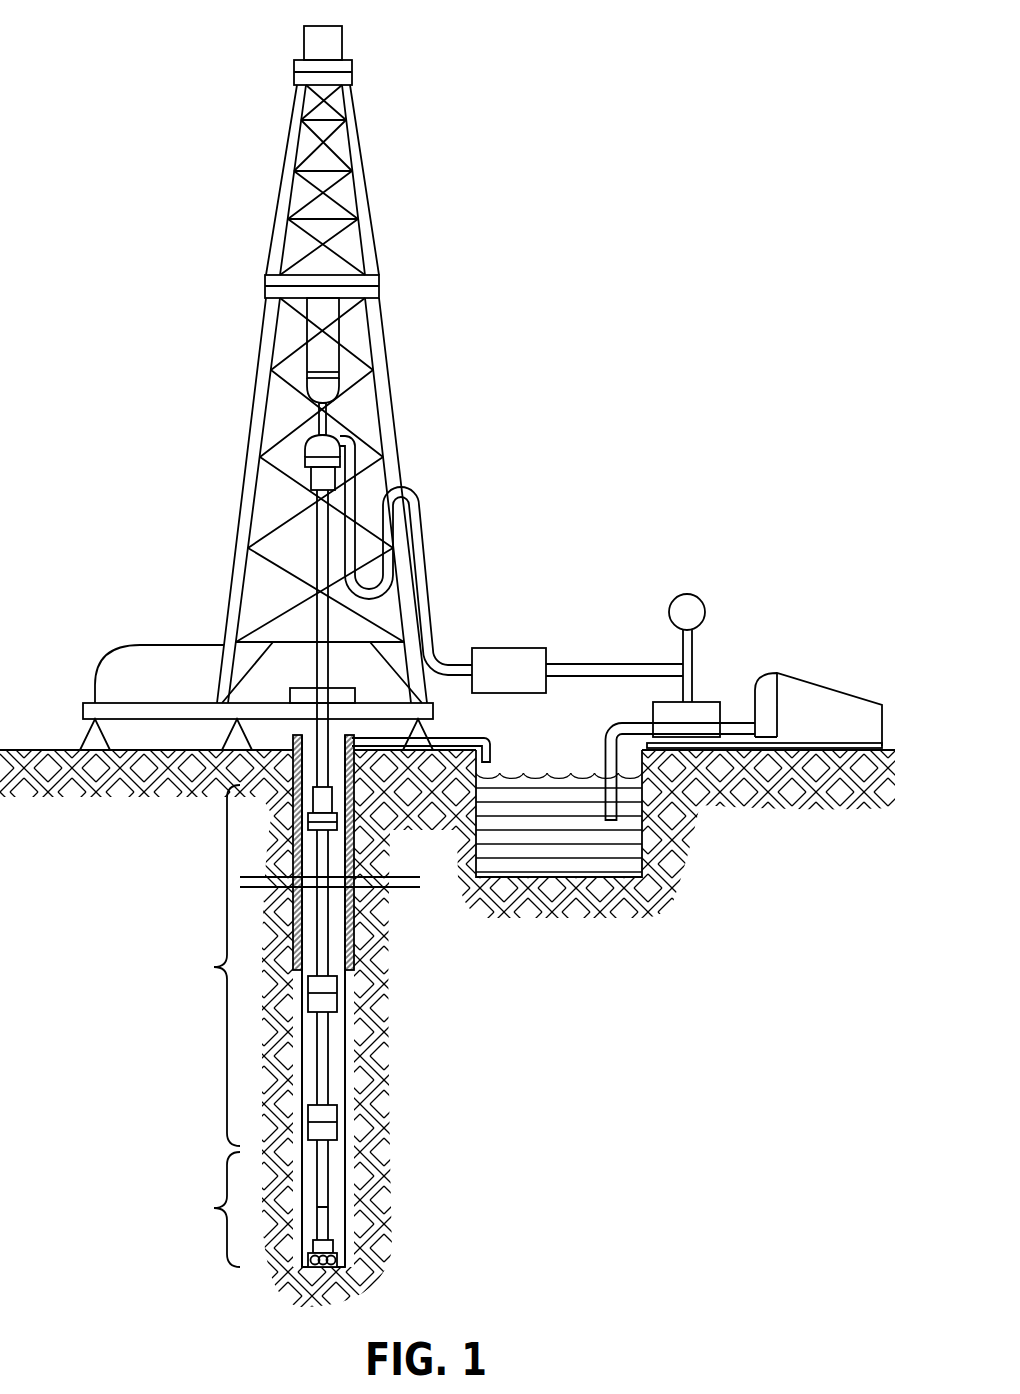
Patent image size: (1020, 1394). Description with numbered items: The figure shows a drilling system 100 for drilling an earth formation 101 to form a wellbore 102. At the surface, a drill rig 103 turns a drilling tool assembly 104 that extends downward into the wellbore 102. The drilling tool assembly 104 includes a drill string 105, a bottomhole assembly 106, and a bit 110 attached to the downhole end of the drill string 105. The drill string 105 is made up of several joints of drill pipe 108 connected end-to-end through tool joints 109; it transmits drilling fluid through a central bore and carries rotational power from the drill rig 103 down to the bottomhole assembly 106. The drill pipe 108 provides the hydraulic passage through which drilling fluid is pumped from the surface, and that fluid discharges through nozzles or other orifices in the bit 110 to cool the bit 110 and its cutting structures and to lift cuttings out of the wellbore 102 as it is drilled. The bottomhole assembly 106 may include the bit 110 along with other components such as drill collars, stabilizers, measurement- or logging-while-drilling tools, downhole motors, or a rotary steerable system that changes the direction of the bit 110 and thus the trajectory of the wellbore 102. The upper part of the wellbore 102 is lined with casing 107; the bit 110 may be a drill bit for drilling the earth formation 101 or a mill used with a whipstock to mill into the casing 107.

The drilling system 100 is at (487, 65).
The earth formation 101 is at (452, 797).
The wellbore 102 is at (348, 1100).
The drill rig 103 is at (254, 404).
The drilling tool assembly 104 is at (364, 949).
The drill string 105 is at (200, 965).
The bottomhole assembly 106 is at (200, 1209).
The casing 107 is at (357, 923).
The drill pipe 108 is at (330, 1062).
The tool joints 109 is at (334, 1007).
The bit 110 is at (340, 1257).